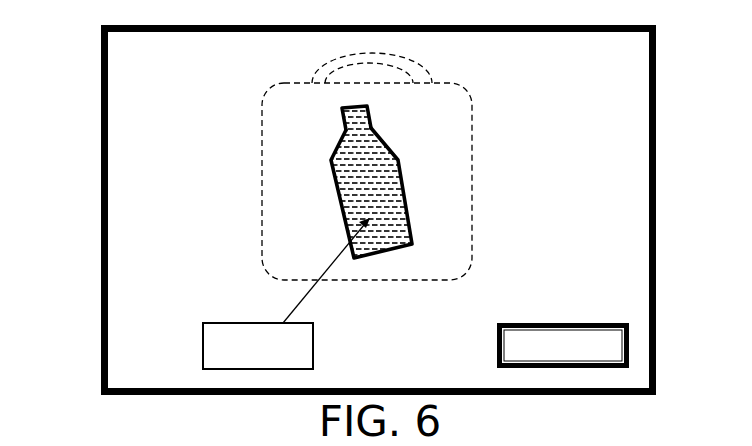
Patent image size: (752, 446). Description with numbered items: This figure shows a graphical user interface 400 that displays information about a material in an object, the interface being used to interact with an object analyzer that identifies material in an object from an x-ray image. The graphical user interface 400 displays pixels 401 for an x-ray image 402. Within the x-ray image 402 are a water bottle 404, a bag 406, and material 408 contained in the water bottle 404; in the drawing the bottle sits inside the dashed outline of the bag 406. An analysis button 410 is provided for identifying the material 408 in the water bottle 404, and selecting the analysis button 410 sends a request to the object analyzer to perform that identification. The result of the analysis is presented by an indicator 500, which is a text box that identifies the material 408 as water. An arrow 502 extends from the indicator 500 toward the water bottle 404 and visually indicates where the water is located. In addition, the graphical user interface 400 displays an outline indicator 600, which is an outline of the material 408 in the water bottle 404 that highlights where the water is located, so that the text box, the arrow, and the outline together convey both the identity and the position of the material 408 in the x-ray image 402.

The graphical user interface 400 is at (101, 188).
The pixels 401 is at (641, 151).
The x-ray image 402 is at (630, 208).
The water bottle 404 is at (400, 158).
The bag 406 is at (473, 174).
The material 408 is at (341, 206).
The analysis button 410 is at (563, 323).
The indicator 500 is at (203, 345).
The arrow 502 is at (302, 300).
The outline indicator 600 is at (371, 117).